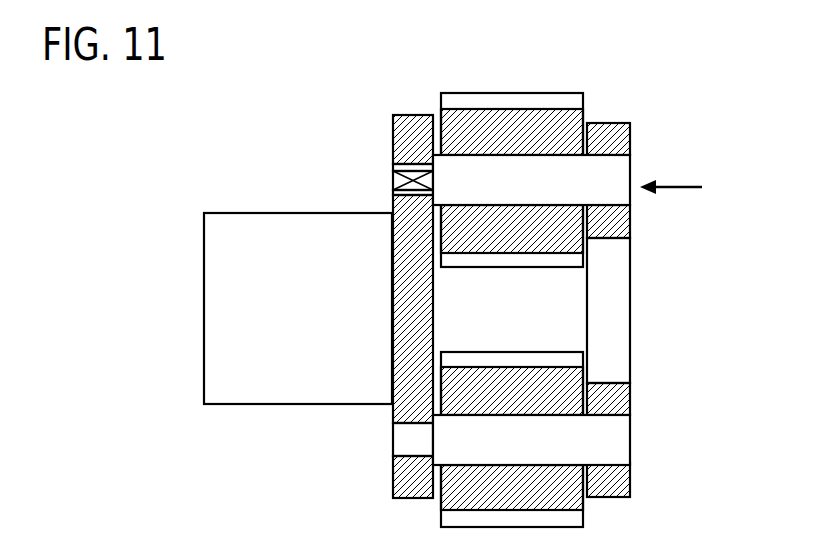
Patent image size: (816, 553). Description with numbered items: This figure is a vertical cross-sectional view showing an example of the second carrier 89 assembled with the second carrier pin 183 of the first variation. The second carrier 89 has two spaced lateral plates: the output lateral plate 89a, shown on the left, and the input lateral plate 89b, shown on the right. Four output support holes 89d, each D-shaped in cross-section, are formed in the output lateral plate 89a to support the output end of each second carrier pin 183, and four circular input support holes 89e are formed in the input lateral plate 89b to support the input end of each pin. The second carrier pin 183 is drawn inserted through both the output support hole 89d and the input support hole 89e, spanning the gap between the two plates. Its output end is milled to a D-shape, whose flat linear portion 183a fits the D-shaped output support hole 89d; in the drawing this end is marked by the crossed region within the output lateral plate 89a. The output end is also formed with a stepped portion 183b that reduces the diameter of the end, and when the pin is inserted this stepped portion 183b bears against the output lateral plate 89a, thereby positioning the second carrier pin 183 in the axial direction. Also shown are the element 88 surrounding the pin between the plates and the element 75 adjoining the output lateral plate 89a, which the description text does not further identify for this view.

The motor body 75 is at (248, 388).
The coil 88 is at (541, 98).
The second carrier 89 is at (506, 270).
The output lateral plate 89a is at (392, 128).
The input lateral plate 89b is at (631, 130).
The output support hole 89d is at (392, 167).
The input support hole 89e is at (618, 202).
The second carrier pin 183 is at (613, 167).
The linear portion 183a is at (392, 185).
The stepped portion 183b is at (432, 448).